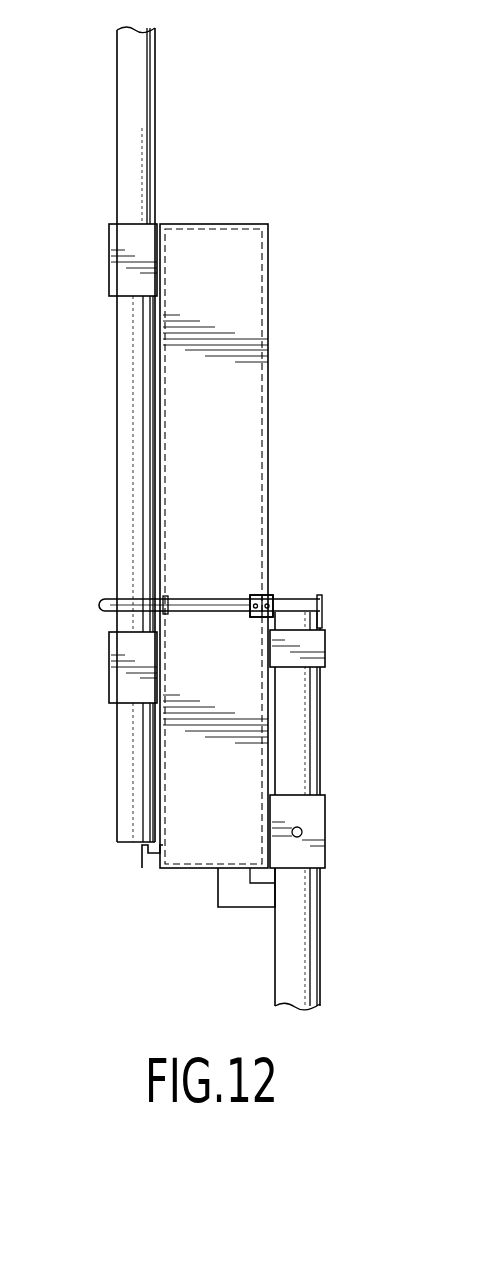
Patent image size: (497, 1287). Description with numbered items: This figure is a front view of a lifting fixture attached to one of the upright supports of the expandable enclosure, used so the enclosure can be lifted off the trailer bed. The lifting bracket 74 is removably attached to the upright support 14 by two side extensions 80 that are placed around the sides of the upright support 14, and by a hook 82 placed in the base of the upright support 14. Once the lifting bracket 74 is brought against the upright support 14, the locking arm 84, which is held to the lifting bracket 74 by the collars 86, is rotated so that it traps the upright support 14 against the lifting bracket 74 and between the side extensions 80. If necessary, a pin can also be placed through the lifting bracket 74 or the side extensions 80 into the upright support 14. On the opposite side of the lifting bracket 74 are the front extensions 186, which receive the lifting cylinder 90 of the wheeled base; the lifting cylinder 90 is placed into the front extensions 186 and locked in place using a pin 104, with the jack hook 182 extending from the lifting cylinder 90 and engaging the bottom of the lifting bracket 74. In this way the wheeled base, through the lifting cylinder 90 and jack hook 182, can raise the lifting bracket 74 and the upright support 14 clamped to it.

The upright support 14 is at (148, 94).
The side extensions 80 is at (117, 275).
The lifting bracket 74 is at (227, 455).
The collars 86 is at (165, 597).
The locking arm 84 is at (287, 600).
The front extensions 186 is at (326, 641).
The pin 104 is at (302, 831).
The lifting cylinder 90 is at (313, 906).
The jack hook 182 is at (240, 895).
The hook 82 is at (147, 860).